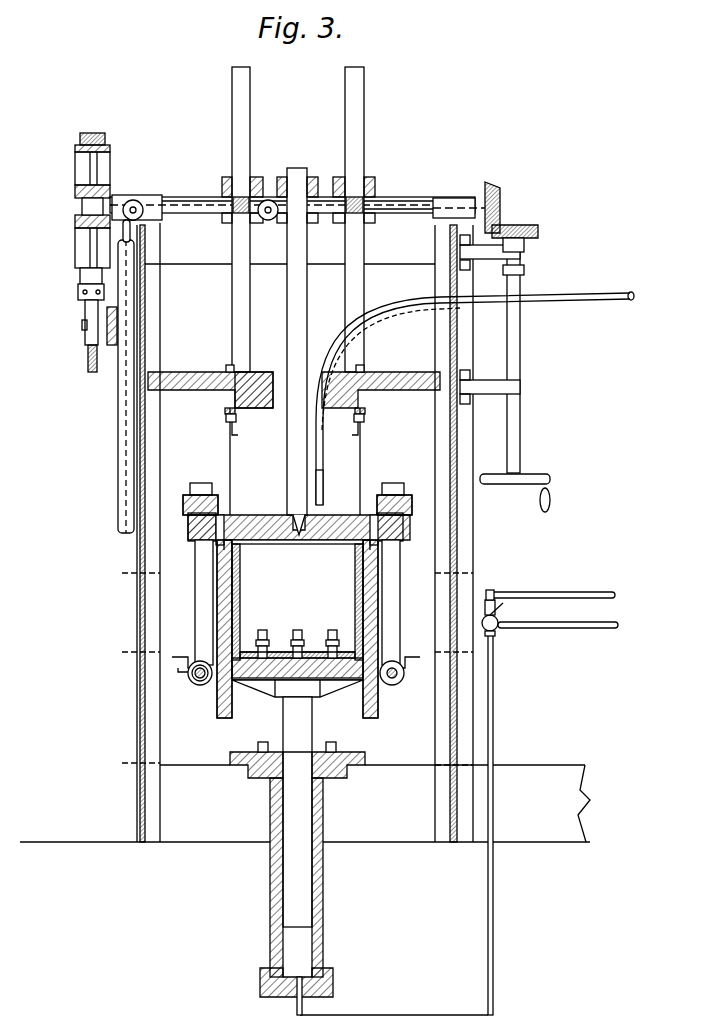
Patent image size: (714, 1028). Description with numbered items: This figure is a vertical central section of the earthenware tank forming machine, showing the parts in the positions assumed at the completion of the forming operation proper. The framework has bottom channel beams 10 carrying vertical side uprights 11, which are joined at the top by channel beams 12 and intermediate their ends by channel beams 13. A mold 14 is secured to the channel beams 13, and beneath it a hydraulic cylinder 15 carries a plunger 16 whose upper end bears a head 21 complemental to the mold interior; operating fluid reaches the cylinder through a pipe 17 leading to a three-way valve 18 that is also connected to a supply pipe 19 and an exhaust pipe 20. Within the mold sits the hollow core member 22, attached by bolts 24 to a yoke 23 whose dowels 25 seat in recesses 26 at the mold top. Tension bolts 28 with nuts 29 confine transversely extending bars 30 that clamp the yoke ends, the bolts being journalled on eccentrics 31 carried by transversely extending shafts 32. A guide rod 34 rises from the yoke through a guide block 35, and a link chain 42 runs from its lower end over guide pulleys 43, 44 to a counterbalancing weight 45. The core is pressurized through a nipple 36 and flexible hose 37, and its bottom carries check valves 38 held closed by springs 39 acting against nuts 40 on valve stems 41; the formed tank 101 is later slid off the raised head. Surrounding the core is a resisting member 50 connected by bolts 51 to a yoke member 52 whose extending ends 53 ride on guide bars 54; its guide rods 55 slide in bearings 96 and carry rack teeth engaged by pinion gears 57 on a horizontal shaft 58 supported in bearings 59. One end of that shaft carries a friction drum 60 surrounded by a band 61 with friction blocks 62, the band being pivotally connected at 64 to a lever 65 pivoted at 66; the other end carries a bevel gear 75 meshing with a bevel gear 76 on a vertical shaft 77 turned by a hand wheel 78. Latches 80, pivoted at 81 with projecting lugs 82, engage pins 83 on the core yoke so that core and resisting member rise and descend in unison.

The channel beams 10 is at (185, 843).
The vertical side uprights 11 is at (137, 515).
The channel beams 12 is at (196, 265).
The channel beams 13 is at (172, 660).
The mold 14 is at (378, 608).
The hydraulic cylinder 15 is at (323, 890).
The plunger 16 is at (290, 893).
The pipe 17 is at (494, 748).
The three-way valve 18 is at (498, 628).
The supply pipe 19 is at (590, 628).
The exhaust pipe 20 is at (585, 592).
The head 21 is at (345, 700).
The core member 22 is at (240, 598).
The yoke 23 is at (280, 515).
The bolts 24 is at (403, 528).
The dowels 25 is at (216, 535).
The recesses 26 is at (224, 548).
The tension bolts 28 is at (195, 598).
The nuts 29 is at (297, 477).
The transversely extending bars 30 is at (183, 505).
The eccentrics 31 is at (188, 676).
The transversely extending shafts 32 is at (196, 678).
The guide rod 34 is at (307, 308).
The guide block 35 is at (316, 177).
The nipple 36 is at (324, 500).
The flexible hose 37 is at (598, 296).
The check valves 38 is at (198, 682).
The springs 39 is at (292, 640).
The nuts 40 is at (333, 640).
The valve stems 41 is at (378, 640).
The link chain 42 is at (205, 197).
The guide pulley 43 is at (268, 200).
The guide pulley 44 is at (140, 202).
The counterbalancing weight 45 is at (118, 428).
The resisting member 50 is at (370, 560).
The bolts 51 is at (231, 450).
The yoke member 52 is at (260, 372).
The extending ends 53 is at (226, 368).
The guide bars 54 is at (148, 347).
The guide rods 55 is at (232, 318).
The pinion gears 57 is at (228, 214).
The horizontal shaft 58 is at (410, 214).
The bearings 59 is at (122, 195).
The friction drum 60 is at (75, 176).
The band 61 is at (92, 133).
The friction blocks 62 is at (78, 147).
The pivotal connection 64 is at (78, 295).
The lever 65 is at (88, 360).
The pivot 66 is at (84, 327).
The bevel gear 75 is at (500, 190).
The bevel gear 76 is at (538, 230).
The vertical shaft 77 is at (520, 317).
The hand wheel 78 is at (548, 478).
The latches 80 is at (232, 432).
The pivot 81 is at (226, 418).
The projecting lugs 82 is at (225, 410).
The pins 83 is at (190, 495).
The bearings 96 is at (225, 177).
The formed tank 101 is at (240, 616).